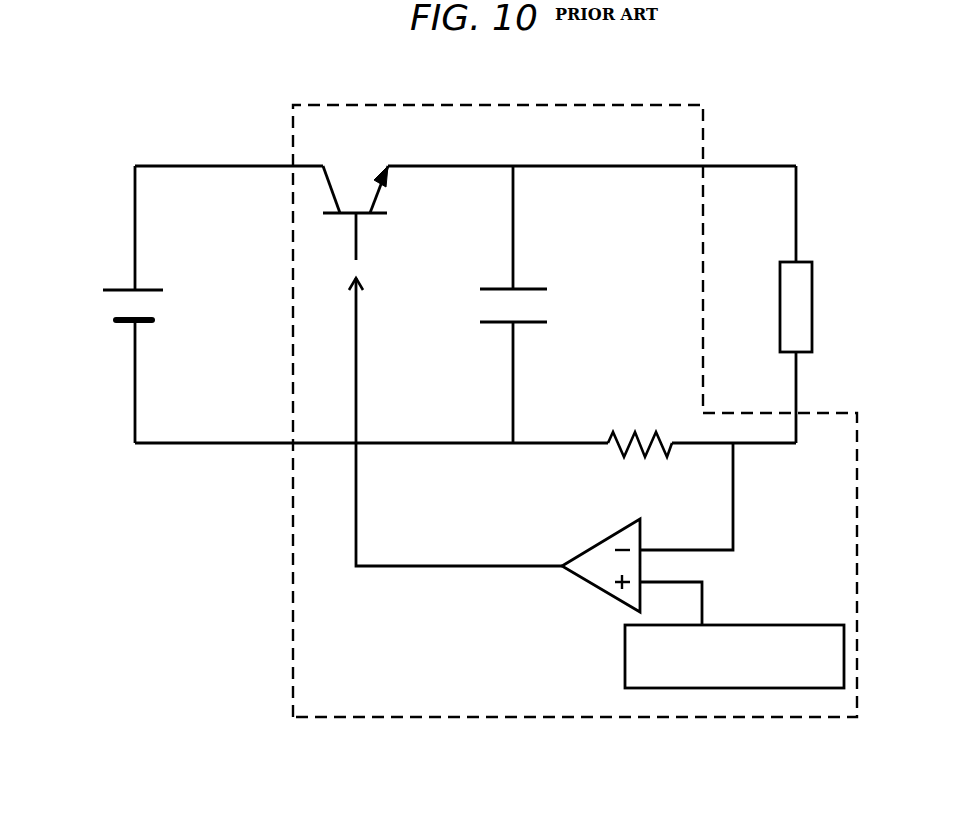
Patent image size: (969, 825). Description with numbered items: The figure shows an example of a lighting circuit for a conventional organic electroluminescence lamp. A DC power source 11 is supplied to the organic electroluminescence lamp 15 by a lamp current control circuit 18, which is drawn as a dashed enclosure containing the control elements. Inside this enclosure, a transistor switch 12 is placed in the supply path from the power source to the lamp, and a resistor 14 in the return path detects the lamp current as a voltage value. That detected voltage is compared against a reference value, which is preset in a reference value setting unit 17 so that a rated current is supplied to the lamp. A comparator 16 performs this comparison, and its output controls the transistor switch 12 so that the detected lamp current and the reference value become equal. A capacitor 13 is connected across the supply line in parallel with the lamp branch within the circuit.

The DC power source 11 is at (103, 305).
The switch Tr1 12 is at (308, 182).
The capacitor 13 is at (482, 305).
The resistor R1 14 is at (640, 395).
The organic electroluminescence lamp 15 is at (812, 277).
The comparator 16 is at (595, 545).
The Ila reference value setting unit 17 is at (762, 625).
The lamp current control circuit 18 is at (543, 718).